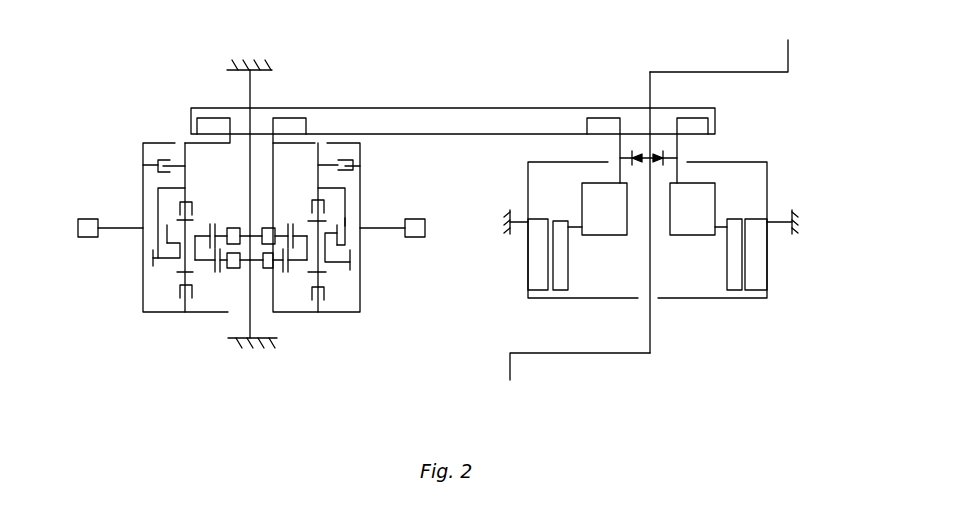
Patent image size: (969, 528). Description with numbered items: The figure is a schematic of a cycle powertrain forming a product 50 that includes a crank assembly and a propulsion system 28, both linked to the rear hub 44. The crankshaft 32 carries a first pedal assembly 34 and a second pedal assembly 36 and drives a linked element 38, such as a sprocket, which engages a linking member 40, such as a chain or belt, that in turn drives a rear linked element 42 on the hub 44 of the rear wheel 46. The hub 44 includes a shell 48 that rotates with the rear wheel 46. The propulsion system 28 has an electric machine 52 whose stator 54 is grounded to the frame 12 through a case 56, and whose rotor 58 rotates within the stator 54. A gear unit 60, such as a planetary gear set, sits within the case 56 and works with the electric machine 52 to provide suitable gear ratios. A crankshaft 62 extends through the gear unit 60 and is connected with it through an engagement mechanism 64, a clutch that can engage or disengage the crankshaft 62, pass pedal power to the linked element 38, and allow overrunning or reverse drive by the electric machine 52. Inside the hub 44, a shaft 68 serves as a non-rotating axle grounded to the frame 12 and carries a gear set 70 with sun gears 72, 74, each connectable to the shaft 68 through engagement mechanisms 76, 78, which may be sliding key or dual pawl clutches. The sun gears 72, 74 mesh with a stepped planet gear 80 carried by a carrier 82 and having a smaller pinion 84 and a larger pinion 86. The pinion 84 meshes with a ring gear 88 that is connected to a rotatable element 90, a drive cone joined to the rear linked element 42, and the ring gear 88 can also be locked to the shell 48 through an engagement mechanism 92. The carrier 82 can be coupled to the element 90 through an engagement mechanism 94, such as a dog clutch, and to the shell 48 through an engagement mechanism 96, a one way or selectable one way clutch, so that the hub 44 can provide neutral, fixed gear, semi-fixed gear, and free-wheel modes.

The frame 12 is at (257, 62).
The propulsion system 28 is at (699, 336).
The crankshaft 32 is at (649, 84).
The first pedal assembly 34 is at (788, 46).
The second pedal assembly 36 is at (511, 366).
The linked element 38 is at (714, 118).
The linking member 40 is at (404, 108).
The rear linked element 42 is at (196, 118).
The hub 44 is at (181, 331).
The rear wheel 46 is at (83, 238).
The shell 48 is at (142, 154).
The product 50 is at (204, 84).
The electric machine 52 is at (757, 296).
The stator 54 is at (762, 263).
The case 56 is at (608, 299).
The rotor 58 is at (735, 224).
The gear unit 60 is at (705, 218).
The crankshaft 62 is at (652, 270).
The engagement mechanism 64 is at (665, 158).
The shaft 68 is at (252, 95).
The gear set 70 is at (147, 260).
The gear 72 is at (298, 230).
The gear 74 is at (284, 272).
The engagement mechanism 76 is at (232, 228).
The engagement mechanism 78 is at (234, 268).
The gear 80 is at (314, 226).
The carrier 82 is at (184, 220).
The pinion 84 is at (342, 235).
The pinion 86 is at (351, 265).
The gear 88 is at (345, 220).
The element 90 is at (318, 150).
The engagement mechanism 92 is at (365, 160).
The engagement mechanism 94 is at (326, 202).
The engagement mechanism 96 is at (323, 293).